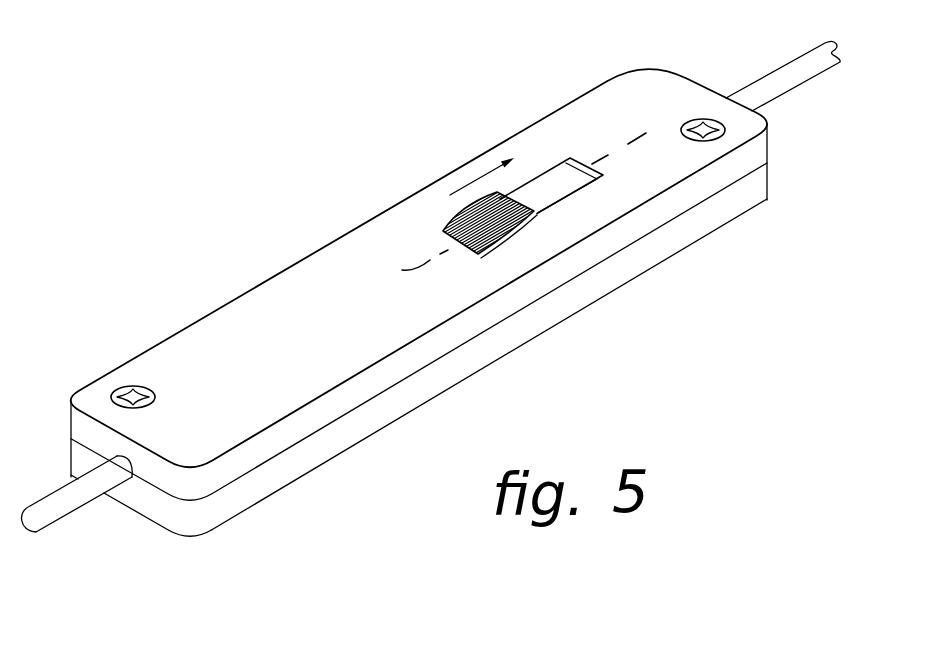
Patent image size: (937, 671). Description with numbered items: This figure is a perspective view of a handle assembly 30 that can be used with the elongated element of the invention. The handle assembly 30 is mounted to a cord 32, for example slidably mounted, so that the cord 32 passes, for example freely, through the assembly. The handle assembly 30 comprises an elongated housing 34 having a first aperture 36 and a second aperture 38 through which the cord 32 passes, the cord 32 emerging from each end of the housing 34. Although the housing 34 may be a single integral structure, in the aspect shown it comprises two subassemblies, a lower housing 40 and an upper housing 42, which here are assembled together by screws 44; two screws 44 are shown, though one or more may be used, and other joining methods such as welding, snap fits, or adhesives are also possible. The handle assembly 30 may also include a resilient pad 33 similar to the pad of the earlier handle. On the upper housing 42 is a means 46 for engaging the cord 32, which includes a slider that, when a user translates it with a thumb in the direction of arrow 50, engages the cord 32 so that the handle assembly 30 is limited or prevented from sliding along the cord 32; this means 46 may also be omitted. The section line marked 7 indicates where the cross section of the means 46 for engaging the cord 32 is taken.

The handle assembly 30 is at (278, 176).
The cord 32 is at (70, 513).
The resilient pad 33 is at (150, 531).
The elongated housing 34 is at (650, 70).
The first aperture 36 is at (158, 452).
The second aperture 38 is at (785, 114).
The lower housing 40 is at (392, 403).
The upper housing 42 is at (522, 283).
The screws 44 is at (131, 390).
The means for engaging cord 46 is at (544, 148).
The arrow 50 is at (472, 182).
The section line 7- 7 is at (357, 245).